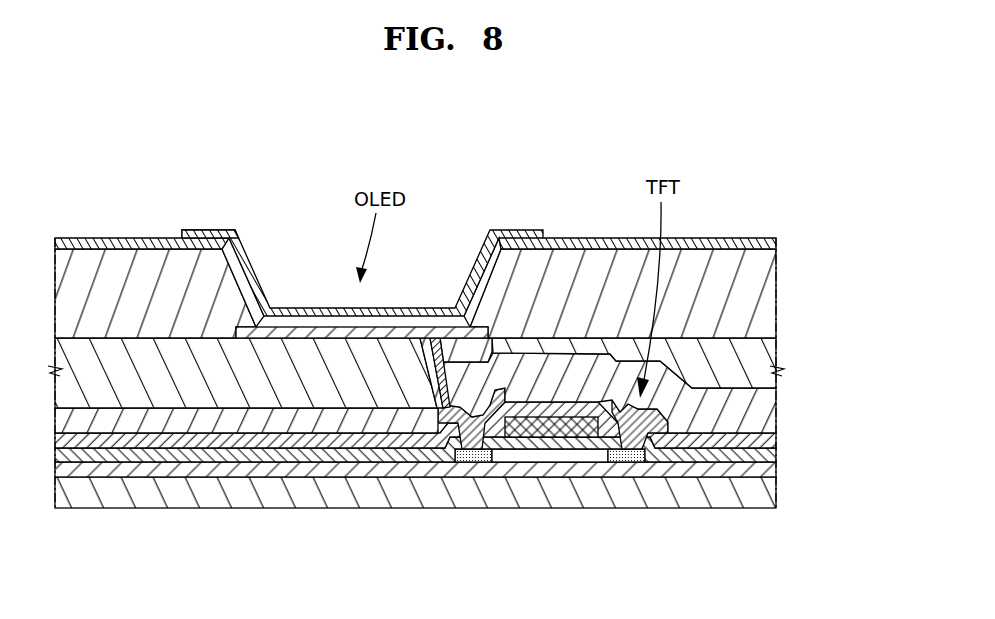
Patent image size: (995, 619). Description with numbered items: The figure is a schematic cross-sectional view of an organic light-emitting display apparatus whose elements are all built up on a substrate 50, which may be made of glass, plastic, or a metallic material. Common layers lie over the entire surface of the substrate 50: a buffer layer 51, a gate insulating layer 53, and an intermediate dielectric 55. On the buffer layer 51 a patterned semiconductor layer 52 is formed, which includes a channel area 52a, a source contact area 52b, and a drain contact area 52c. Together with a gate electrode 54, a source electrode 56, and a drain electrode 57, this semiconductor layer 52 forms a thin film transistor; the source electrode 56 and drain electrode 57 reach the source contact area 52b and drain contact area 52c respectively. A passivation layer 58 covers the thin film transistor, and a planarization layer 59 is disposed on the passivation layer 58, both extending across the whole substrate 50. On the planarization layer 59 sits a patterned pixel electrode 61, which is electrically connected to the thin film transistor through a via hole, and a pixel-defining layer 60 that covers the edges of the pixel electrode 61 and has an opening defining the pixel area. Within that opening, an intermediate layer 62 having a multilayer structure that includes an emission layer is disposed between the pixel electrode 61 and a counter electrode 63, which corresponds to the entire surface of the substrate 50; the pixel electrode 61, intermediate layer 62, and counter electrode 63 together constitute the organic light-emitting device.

The substrate 50 is at (768, 493).
The buffer layer 51 is at (768, 472).
The semiconductor layer 52 is at (575, 516).
The channel area 52a is at (570, 462).
The source contact area 52b is at (630, 462).
The drain contact area 52c is at (462, 462).
The gate insulating layer 53 is at (768, 457).
The gate electrode 54 is at (534, 440).
The intermediate dielectric 55 is at (770, 442).
The source electrode 56 is at (633, 440).
The drain electrode 57 is at (475, 452).
The passivation layer 58 is at (768, 408).
The planarization layer 59 is at (768, 357).
The pixel-defining layer 60 is at (767, 300).
The pixel electrode 61 is at (294, 333).
The intermediate layer 62 is at (488, 268).
The counter electrode 63 is at (191, 248).